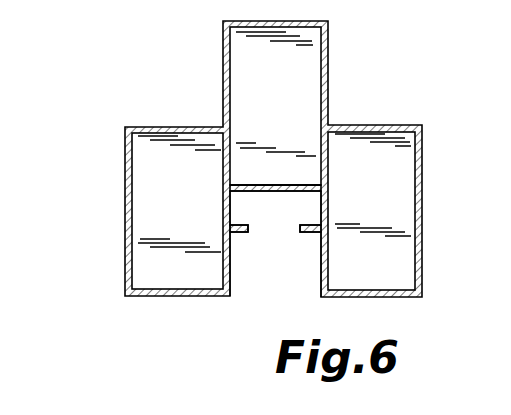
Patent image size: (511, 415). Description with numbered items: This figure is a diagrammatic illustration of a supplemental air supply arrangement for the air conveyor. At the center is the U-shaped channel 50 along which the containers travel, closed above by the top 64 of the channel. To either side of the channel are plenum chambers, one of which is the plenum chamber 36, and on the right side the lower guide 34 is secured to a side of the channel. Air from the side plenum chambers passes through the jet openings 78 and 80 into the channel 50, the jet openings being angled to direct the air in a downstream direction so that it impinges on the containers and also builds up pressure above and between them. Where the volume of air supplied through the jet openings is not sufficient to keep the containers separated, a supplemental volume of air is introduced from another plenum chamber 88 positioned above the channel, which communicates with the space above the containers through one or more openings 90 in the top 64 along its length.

The plenum chamber 88 is at (328, 60).
The top 64 is at (300, 186).
The openings 90 is at (276, 185).
The plenum chamber 36 is at (125, 192).
The lower guide 34 is at (422, 190).
The jet opening 78 is at (225, 210).
The jet opening 80 is at (328, 207).
The U-shaped channel 50 is at (268, 207).